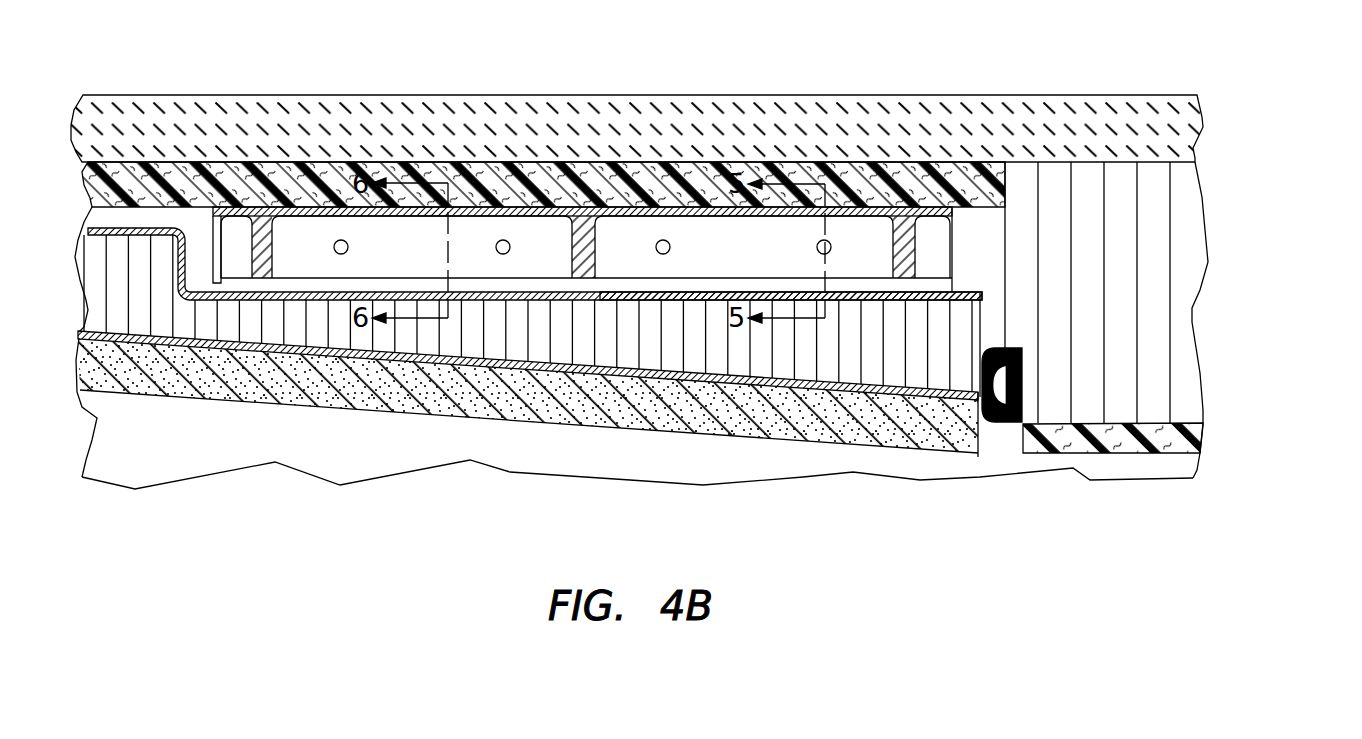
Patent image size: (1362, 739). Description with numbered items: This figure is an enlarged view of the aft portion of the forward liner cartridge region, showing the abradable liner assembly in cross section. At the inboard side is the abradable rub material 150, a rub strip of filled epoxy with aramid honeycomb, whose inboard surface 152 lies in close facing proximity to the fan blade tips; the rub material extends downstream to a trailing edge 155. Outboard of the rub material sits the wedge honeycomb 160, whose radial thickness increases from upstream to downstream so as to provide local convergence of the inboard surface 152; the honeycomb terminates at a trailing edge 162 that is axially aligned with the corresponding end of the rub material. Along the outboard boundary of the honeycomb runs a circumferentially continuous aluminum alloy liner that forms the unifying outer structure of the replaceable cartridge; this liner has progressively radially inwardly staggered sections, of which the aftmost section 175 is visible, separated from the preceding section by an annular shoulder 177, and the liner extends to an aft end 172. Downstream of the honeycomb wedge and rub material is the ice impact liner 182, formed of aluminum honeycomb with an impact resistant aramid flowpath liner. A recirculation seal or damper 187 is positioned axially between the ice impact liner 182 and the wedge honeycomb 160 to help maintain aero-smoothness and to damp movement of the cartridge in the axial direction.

The annular shoulder 177 is at (205, 291).
The liner section 175 is at (220, 207).
The aft end/rim of liner 172 is at (982, 293).
The trailing edge/rim of honeycomb 162 is at (982, 327).
The ice impact liner 182 is at (1185, 346).
The wedge honeycomb 160 is at (640, 345).
The abradable rub material 150 is at (200, 390).
The inboard surface 152 is at (110, 395).
The trailing edge/rim of rub material 155 is at (983, 423).
The recirculation seal/damper 187 is at (1000, 424).